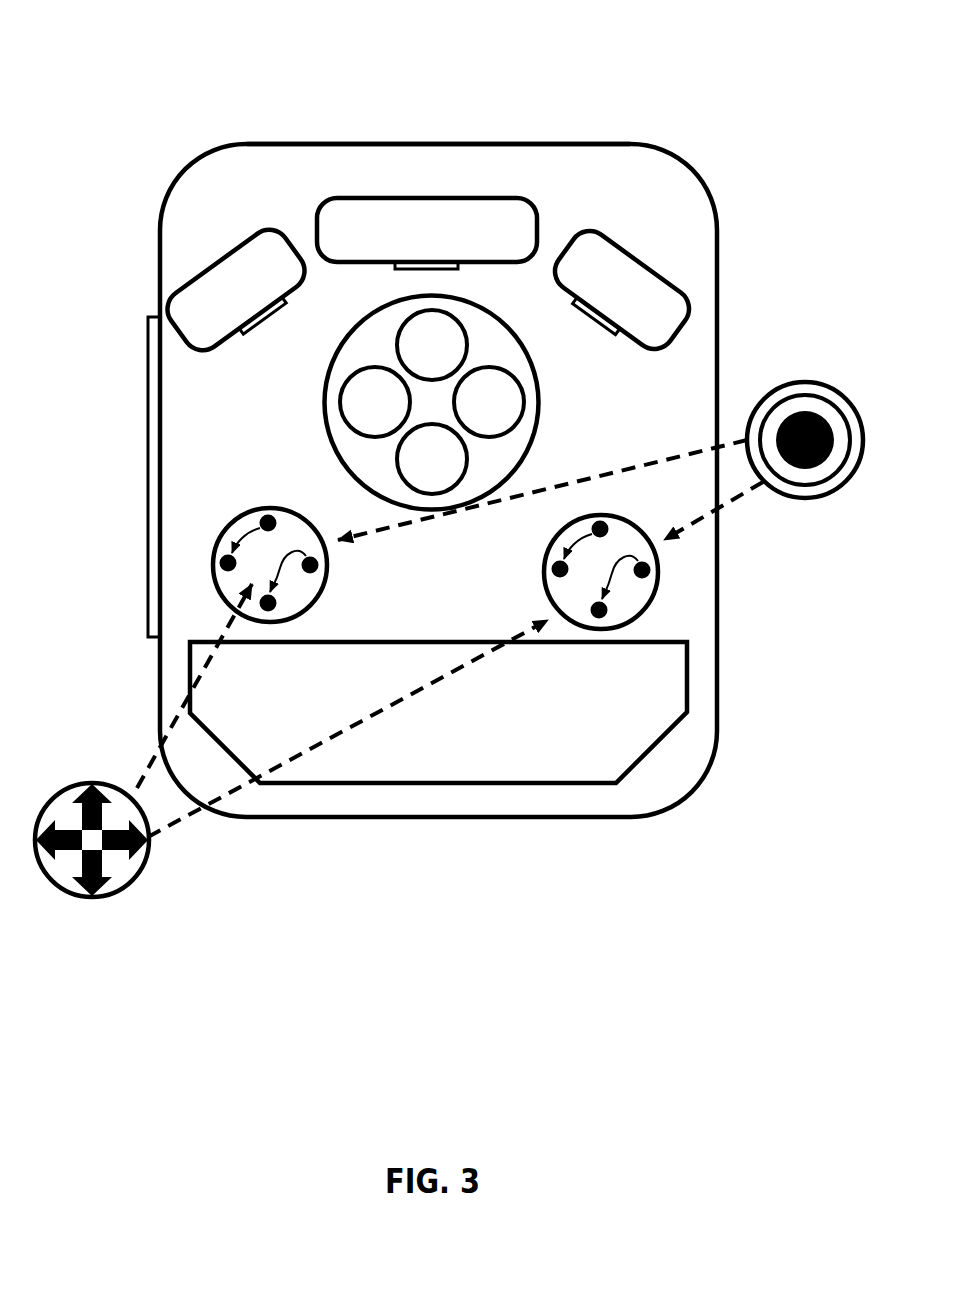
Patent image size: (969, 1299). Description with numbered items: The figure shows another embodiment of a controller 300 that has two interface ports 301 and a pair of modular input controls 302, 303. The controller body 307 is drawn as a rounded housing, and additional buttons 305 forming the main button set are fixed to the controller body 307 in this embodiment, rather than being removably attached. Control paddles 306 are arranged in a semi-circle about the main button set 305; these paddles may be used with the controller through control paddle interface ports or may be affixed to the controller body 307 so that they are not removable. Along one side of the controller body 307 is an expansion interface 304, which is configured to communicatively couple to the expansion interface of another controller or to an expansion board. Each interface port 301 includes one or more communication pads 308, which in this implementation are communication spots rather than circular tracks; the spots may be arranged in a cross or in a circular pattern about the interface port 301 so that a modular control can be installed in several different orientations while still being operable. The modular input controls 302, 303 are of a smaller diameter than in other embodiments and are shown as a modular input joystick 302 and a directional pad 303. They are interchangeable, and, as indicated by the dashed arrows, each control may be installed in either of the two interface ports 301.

The controller 300 is at (240, 74).
The interface port 301 is at (236, 514).
The modular input joystick 302 is at (801, 380).
The directional pad 303 is at (88, 781).
The expansion interface 304 is at (150, 311).
The buttons 305 is at (350, 333).
The control paddles 306 is at (426, 195).
The controller body 307 is at (452, 140).
The communication pads 308 is at (311, 548).